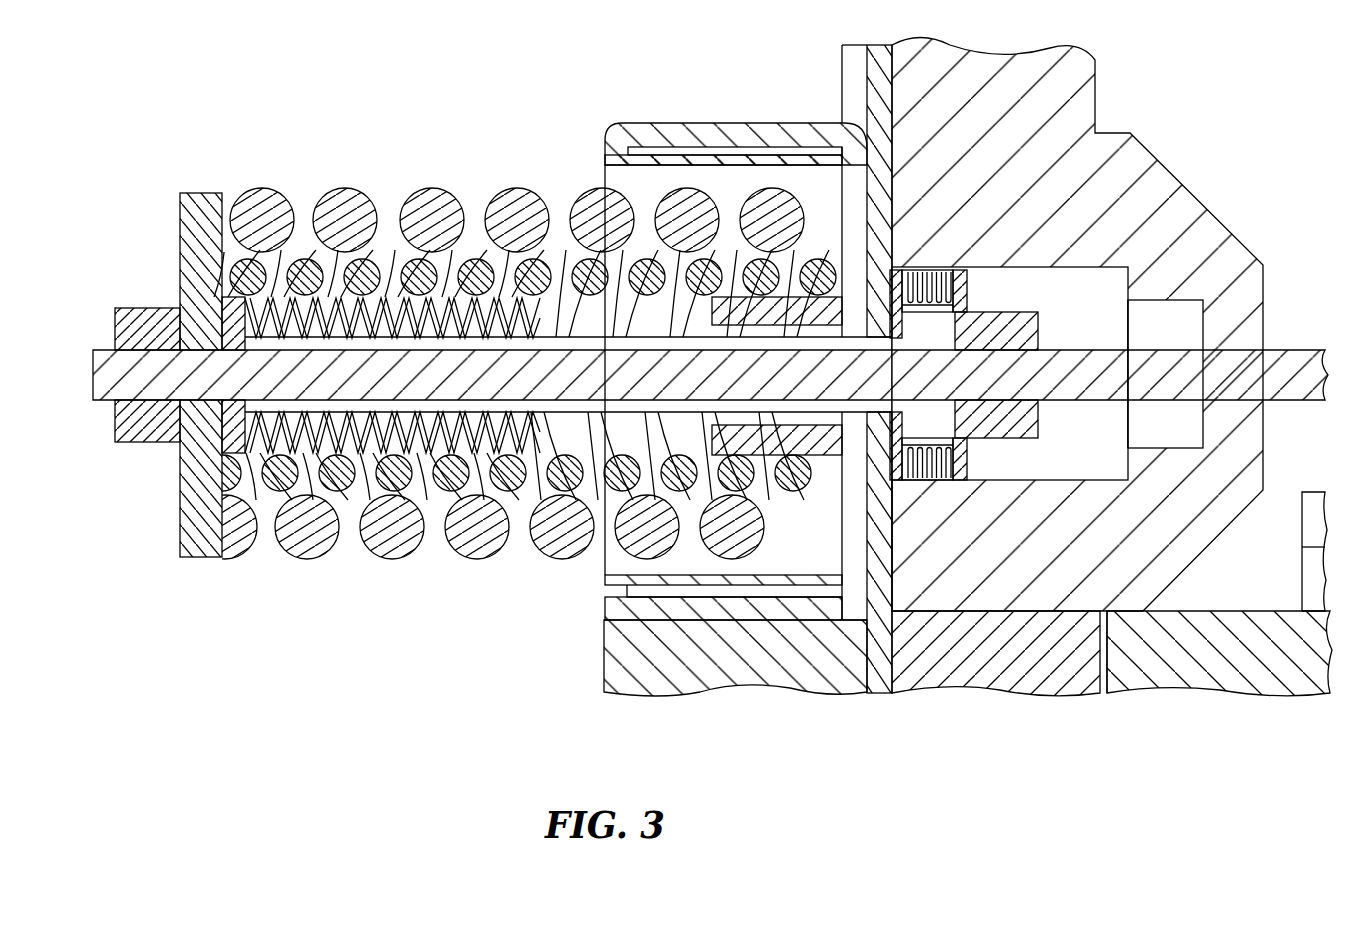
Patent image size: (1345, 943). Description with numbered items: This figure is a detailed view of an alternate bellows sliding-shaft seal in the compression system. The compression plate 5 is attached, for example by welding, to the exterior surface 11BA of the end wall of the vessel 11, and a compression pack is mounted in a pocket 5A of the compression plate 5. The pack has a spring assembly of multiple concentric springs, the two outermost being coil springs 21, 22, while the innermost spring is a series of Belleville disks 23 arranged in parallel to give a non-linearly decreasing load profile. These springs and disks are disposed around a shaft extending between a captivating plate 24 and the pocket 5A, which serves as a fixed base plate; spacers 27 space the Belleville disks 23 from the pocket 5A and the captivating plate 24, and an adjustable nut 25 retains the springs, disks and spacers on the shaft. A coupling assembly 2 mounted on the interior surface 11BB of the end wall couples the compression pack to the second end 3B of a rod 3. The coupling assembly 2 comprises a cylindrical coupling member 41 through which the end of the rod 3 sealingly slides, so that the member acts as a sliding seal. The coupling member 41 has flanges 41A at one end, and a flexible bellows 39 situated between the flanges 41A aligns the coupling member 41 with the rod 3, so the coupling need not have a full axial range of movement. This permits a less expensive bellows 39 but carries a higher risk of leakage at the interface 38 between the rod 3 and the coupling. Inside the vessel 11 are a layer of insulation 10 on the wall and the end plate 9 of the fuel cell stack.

The coupling assembly 2 is at (975, 300).
The rod 3 is at (1285, 368).
The second end of rod 3B is at (835, 370).
The compression plate 5 is at (685, 652).
The pocket of compression plate 5A is at (735, 178).
The end plate 9 is at (1252, 640).
The layer of insulation 10 is at (998, 660).
The vessel 11 is at (878, 665).
The exterior surface of end wall 11BA is at (862, 632).
The interior surface of end wall 11BB is at (892, 570).
The coil spring 21 is at (268, 215).
The coil spring 22 is at (383, 300).
The Belleville disks 23 is at (470, 305).
The captivating plate 24 is at (205, 212).
The adjustable nut 25 is at (148, 330).
The spacers 27 is at (228, 427).
The interface 38 is at (1012, 400).
The flexible bellows 39 is at (928, 272).
The cylindrical coupling member 41 is at (1020, 334).
The flanges 41A is at (948, 480).